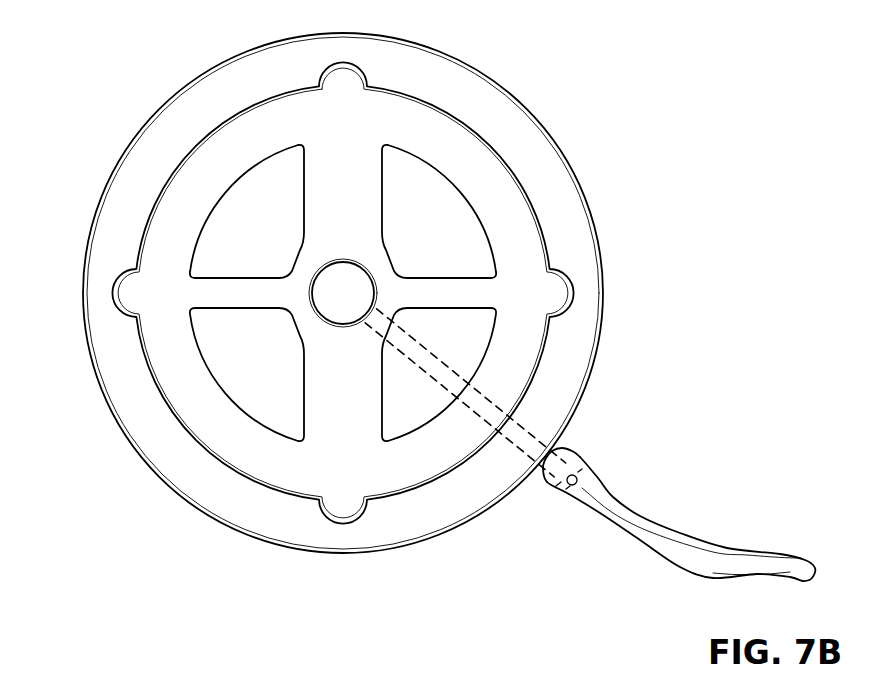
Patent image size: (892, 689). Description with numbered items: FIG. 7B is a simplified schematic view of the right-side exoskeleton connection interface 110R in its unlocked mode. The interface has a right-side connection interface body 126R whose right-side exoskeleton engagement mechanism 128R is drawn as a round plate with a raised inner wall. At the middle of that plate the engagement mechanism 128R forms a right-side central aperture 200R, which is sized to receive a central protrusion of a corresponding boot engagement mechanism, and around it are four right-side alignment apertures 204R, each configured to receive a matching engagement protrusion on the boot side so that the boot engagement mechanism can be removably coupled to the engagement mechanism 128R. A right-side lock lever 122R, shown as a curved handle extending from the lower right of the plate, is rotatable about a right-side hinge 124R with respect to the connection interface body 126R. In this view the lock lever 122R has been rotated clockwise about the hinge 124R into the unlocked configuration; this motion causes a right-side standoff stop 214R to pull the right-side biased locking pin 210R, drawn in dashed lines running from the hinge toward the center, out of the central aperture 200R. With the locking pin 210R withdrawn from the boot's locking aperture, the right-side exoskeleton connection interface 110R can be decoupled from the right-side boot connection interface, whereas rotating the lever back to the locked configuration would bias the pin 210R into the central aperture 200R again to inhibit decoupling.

The right-side exoskeleton connection interface 110R is at (100, 100).
The right-side lock lever 122R is at (717, 547).
The right-side hinge 124R is at (587, 486).
The right-side connection interface body 126R is at (497, 110).
The right-side exoskeleton engagement mechanism 128R is at (547, 237).
The right-side central aperture 200R is at (338, 303).
The right-side alignment apertures 204R is at (243, 212).
The right-side biased locking pin 210R is at (512, 445).
The right-side standoff stop 214R is at (545, 484).